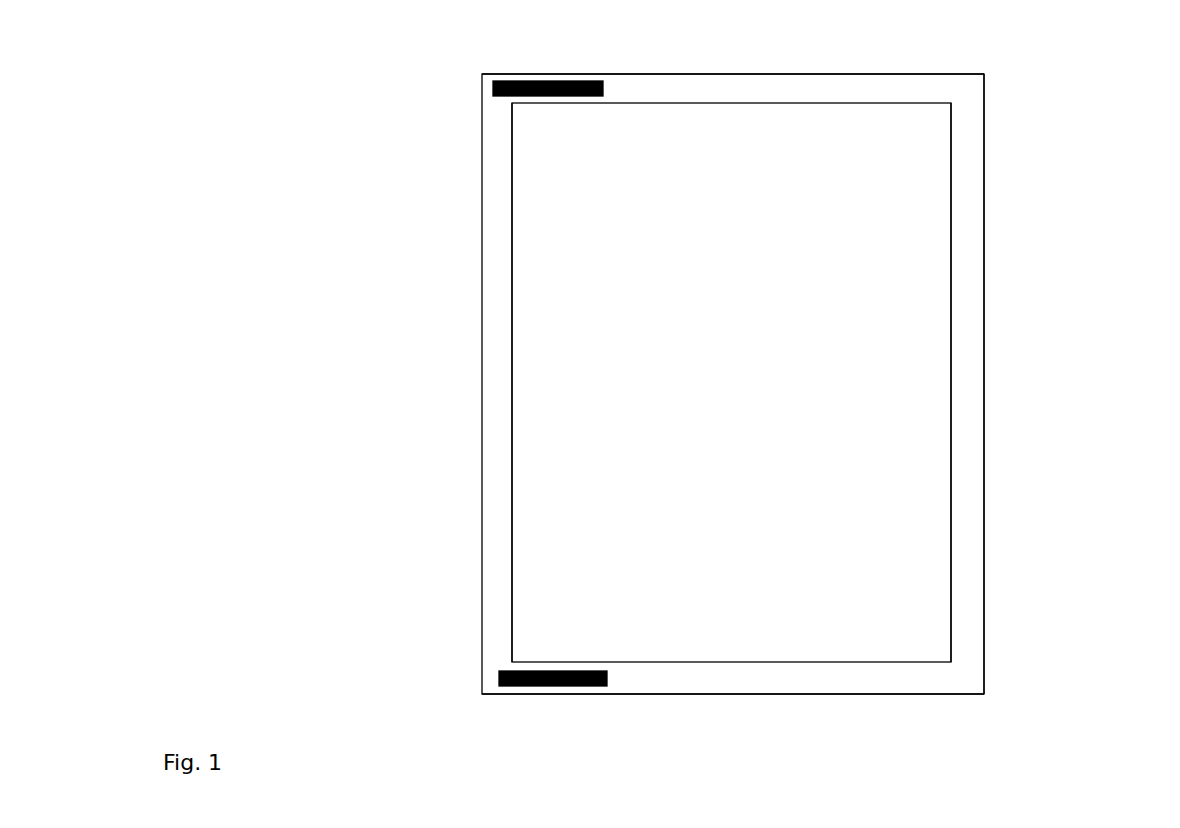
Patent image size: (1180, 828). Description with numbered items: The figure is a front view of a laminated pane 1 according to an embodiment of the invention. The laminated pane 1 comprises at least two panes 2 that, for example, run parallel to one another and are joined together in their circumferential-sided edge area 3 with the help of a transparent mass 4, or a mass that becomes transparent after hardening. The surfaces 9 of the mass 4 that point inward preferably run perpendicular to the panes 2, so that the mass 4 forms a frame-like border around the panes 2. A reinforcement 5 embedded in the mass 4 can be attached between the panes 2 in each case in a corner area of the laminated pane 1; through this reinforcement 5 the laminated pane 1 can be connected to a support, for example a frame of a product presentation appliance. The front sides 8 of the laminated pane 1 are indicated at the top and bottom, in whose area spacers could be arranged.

The laminated pane 1 is at (1075, 156).
The panes 2 is at (711, 272).
The edge area 3 is at (920, 595).
The transparent mass 4 is at (963, 460).
The reinforcement 5 is at (570, 97).
The front sides 8 is at (742, 64).
The surfaces 9 is at (505, 445).